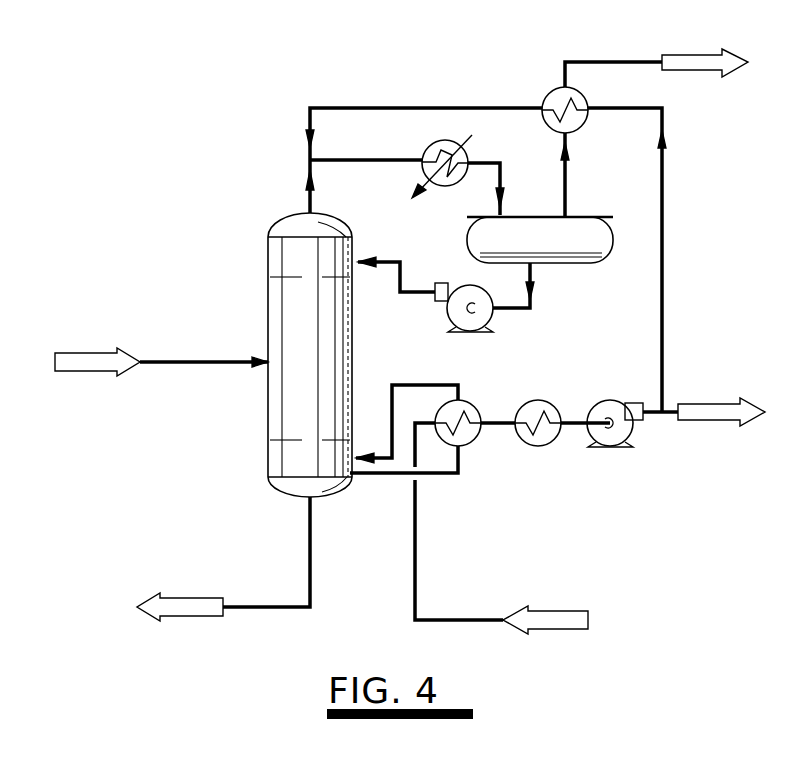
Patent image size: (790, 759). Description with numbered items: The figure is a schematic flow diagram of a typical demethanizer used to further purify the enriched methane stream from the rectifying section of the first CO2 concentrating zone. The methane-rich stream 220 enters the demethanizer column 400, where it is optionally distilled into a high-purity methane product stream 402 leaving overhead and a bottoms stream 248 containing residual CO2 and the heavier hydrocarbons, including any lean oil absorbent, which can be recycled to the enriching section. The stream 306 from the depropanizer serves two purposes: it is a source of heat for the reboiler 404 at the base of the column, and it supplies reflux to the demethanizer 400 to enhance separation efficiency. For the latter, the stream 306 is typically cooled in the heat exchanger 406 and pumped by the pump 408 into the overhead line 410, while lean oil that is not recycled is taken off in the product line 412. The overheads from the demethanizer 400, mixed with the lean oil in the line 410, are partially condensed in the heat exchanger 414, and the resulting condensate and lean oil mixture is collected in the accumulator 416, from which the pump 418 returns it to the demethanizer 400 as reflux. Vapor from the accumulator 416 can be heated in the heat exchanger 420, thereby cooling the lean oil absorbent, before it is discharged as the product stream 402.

The methane-rich stream 220 is at (203, 362).
The bottoms stream 248 is at (310, 553).
The stream from the depropanizer 306 is at (452, 620).
The demethanizer column 400 is at (268, 423).
The high-purity methane product stream 402 is at (697, 75).
The reboiler 404 is at (470, 402).
The heat exchanger 406 is at (528, 447).
The pump 408 is at (620, 447).
The overhead line 410 is at (350, 108).
The product line 412 is at (703, 400).
The heat exchanger 414 is at (455, 187).
The accumulator 416 is at (575, 263).
The pump 418 is at (446, 316).
The heat exchanger 420 is at (548, 94).